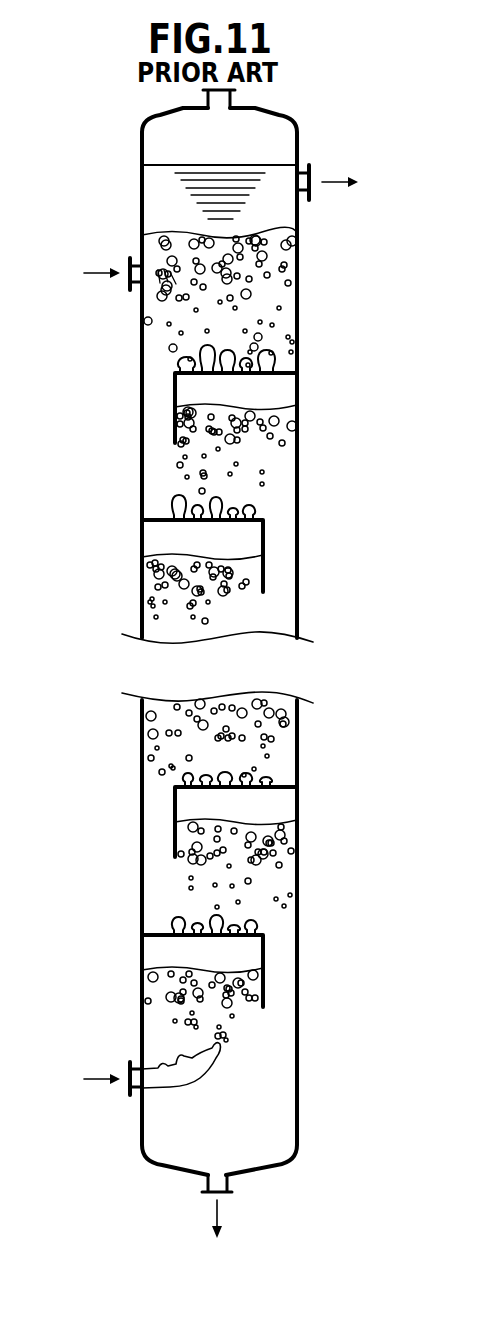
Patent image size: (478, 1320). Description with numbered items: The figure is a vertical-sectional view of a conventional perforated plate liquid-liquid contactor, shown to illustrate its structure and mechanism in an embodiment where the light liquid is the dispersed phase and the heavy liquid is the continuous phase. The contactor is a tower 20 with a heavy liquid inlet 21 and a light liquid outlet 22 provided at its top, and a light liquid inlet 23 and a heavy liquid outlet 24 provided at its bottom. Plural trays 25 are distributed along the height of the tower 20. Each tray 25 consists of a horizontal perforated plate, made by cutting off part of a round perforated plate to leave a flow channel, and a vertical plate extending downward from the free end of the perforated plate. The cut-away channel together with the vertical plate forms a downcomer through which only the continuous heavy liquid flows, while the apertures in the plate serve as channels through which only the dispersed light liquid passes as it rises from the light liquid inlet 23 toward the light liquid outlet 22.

The tower 20 is at (297, 90).
The heavy liquid inlet 21 is at (137, 262).
The light liquid outlet 22 is at (303, 165).
The light liquid inlet 23 is at (137, 1062).
The heavy liquid outlet 24 is at (230, 1180).
The tray 25 is at (160, 505).